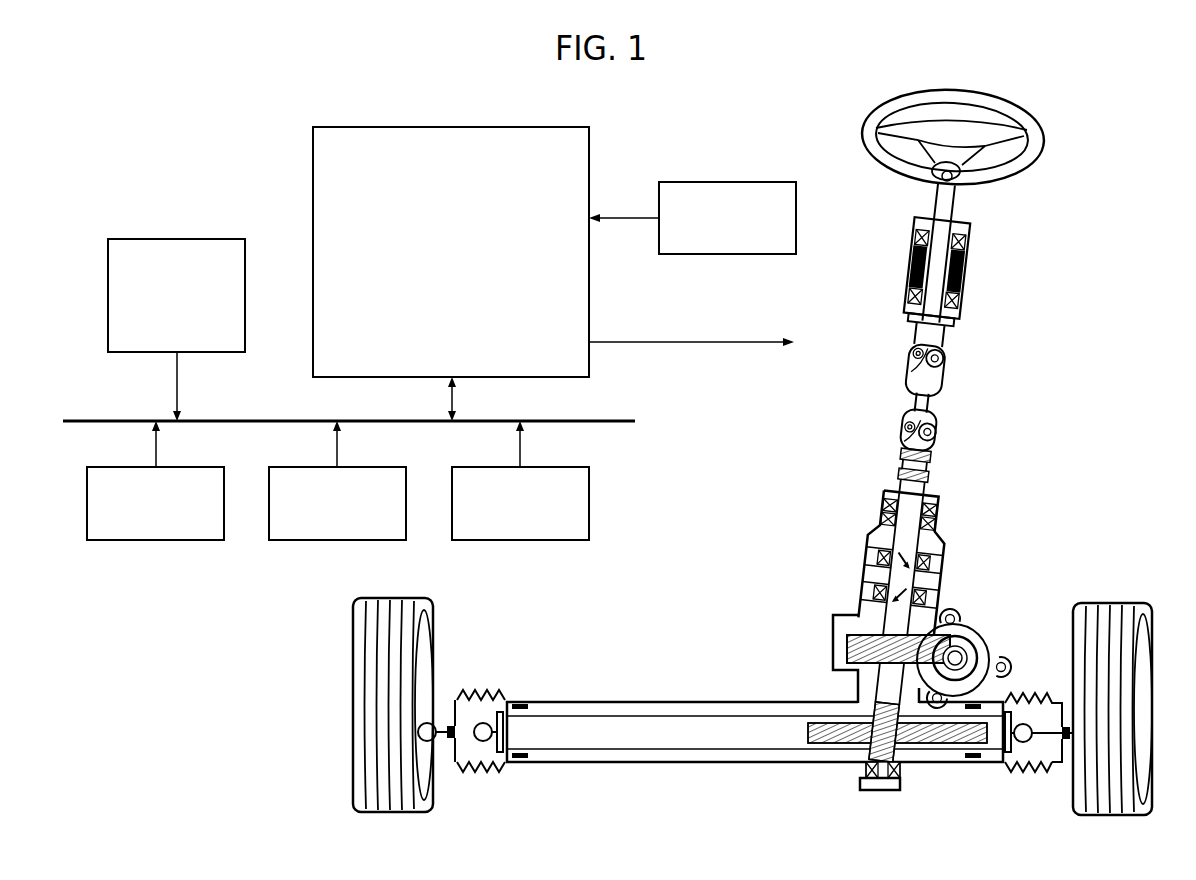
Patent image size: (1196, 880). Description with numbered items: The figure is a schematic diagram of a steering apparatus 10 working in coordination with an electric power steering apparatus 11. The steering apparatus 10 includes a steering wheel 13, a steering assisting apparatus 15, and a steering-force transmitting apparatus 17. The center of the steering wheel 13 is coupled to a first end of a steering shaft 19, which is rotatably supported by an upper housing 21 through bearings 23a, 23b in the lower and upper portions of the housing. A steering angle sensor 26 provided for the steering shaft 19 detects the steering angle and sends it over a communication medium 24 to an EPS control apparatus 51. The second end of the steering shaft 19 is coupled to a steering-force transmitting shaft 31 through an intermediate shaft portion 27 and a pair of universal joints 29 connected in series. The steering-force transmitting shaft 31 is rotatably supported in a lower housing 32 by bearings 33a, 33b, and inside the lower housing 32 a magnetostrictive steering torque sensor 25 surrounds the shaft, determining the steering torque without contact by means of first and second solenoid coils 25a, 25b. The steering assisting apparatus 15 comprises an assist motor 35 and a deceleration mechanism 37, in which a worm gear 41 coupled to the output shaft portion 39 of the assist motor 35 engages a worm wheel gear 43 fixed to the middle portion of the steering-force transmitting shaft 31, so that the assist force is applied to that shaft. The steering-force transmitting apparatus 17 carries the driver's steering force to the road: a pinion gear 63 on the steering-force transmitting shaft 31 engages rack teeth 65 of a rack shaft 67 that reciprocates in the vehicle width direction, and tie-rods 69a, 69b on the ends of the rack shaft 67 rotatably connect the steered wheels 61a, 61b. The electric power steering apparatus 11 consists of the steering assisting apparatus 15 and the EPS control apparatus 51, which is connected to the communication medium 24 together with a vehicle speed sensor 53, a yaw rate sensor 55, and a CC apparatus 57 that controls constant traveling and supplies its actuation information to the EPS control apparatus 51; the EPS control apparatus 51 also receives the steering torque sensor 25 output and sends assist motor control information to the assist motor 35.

The steering apparatus 10 is at (752, 434).
The electric power steering apparatus 11 is at (554, 331).
The steering wheel 13 is at (1042, 143).
The steering assisting apparatus 15 is at (752, 505).
The steering-force transmitting apparatus 17 is at (755, 767).
The steering shaft 19 is at (952, 197).
The upper housing 21 is at (971, 228).
The bearing 23a is at (962, 298).
The bearing 23b is at (970, 238).
The communication medium 24 is at (548, 421).
The steering torque sensor 25 is at (753, 182).
The first solenoid coil 25a is at (943, 565).
The second solenoid coil 25b is at (941, 597).
The steering angle sensor 26 is at (546, 467).
The intermediate shaft portion 27 is at (920, 392).
The universal joints 29 is at (939, 436).
The steering-force transmitting shaft 31 is at (897, 622).
The lower housing 32 is at (880, 530).
The bearing 33a is at (901, 772).
The bearing 33b is at (943, 522).
The assist motor 35 is at (973, 632).
The deceleration mechanism 37 is at (903, 655).
The output shaft portion 39 is at (966, 652).
The worm gear 41 is at (1010, 650).
The worm wheel gear 43 is at (850, 648).
The EPS control apparatus 51 is at (540, 127).
The vehicle speed sensor 53 is at (363, 467).
The yaw rate sensor 55 is at (178, 467).
The CC apparatus 57 is at (200, 239).
The steered wheel 61a is at (1108, 613).
The steered wheel 61b is at (424, 613).
The pinion gear 63 is at (865, 748).
The rack teeth 65 is at (820, 745).
The rack shaft 67 is at (747, 745).
The tie-rod 69a is at (1043, 740).
The tie-rod 69b is at (462, 745).